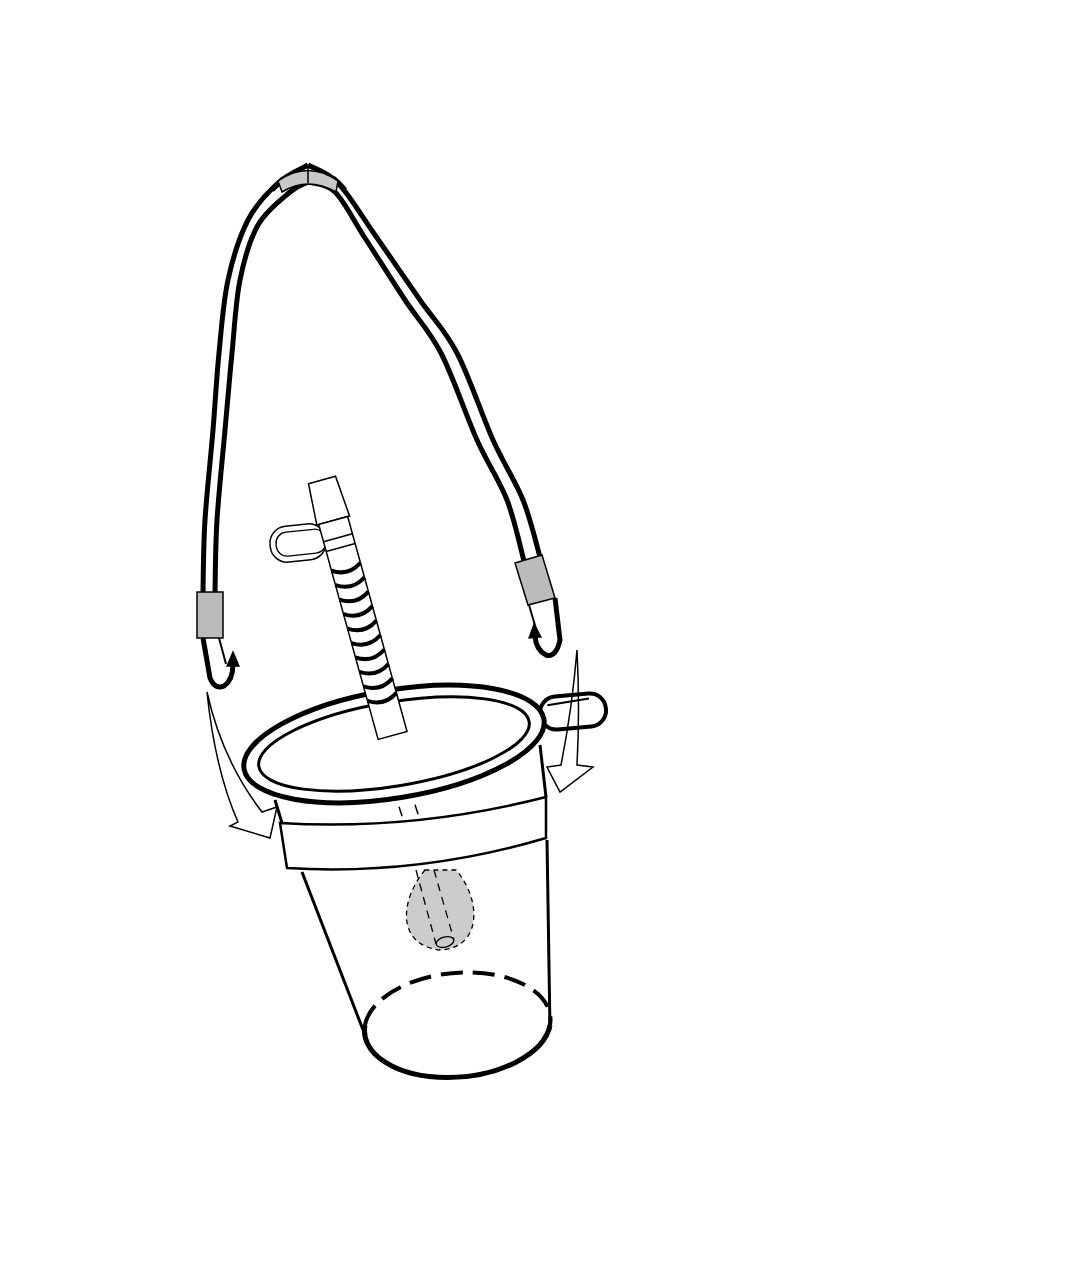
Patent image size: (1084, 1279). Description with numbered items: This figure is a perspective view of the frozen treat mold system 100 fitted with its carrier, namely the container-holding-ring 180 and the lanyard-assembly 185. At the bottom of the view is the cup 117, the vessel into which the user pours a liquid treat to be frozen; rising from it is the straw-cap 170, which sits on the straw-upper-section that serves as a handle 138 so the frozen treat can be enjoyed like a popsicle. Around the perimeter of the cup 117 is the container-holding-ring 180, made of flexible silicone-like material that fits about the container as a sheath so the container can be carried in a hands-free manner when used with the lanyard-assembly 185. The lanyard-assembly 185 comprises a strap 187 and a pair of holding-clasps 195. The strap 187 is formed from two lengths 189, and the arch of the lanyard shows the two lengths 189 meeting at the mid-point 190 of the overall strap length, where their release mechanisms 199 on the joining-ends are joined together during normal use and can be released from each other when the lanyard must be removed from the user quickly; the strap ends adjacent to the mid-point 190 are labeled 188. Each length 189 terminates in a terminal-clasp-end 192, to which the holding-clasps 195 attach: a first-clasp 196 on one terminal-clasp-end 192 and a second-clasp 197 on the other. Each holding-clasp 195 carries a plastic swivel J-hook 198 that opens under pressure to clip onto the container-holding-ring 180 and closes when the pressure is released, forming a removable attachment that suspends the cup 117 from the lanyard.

The frozen treat mold system 100 is at (653, 110).
The lanyard-assembly 185 is at (687, 173).
The strap 187 is at (220, 292).
The lengths 189 is at (432, 277).
The cord ends 188 is at (276, 180).
The mid-point 190 is at (313, 163).
The release mechanism 199 is at (333, 168).
The terminal-clasp-end 192 is at (198, 590).
The holding-clasps 195 is at (194, 606).
The first-clasp 196 is at (194, 626).
The second-clasp 197 is at (559, 586).
The swivel J-hooks 198 is at (201, 668).
The cup 117 is at (550, 885).
The container-holding-ring 180 is at (556, 815).
The handle 138 is at (346, 658).
The straw-cap 170 is at (318, 474).